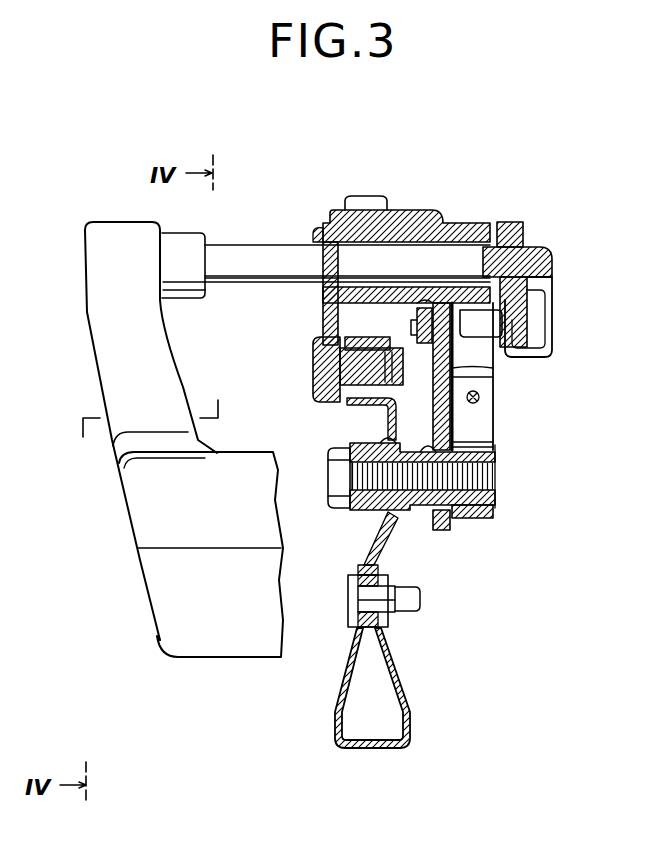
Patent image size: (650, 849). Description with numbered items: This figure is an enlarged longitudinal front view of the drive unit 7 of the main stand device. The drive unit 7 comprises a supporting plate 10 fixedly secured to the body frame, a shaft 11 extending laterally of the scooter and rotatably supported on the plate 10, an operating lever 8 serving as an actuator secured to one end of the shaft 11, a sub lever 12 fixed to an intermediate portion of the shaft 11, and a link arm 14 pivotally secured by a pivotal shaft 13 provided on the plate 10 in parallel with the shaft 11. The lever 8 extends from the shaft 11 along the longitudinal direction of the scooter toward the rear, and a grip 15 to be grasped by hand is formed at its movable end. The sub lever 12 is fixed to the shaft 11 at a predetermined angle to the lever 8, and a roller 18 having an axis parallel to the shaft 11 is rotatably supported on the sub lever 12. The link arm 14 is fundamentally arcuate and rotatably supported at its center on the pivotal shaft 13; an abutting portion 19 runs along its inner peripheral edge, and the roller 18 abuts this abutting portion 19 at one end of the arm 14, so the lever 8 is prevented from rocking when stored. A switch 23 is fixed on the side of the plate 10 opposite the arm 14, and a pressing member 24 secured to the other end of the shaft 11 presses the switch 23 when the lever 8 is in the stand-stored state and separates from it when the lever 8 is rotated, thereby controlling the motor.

The drive unit 7 is at (510, 189).
The operating lever 8 is at (94, 312).
The supporting plate 10 is at (452, 370).
The shaft 11 is at (242, 250).
The sub lever 12 is at (328, 320).
The pivotal shaft 13 is at (410, 512).
The link arm 14 is at (373, 544).
The grip 15 is at (147, 578).
The roller 18 is at (367, 345).
The abutting portion 19 is at (347, 402).
The switch 23 is at (490, 403).
The pressing member 24 is at (490, 323).